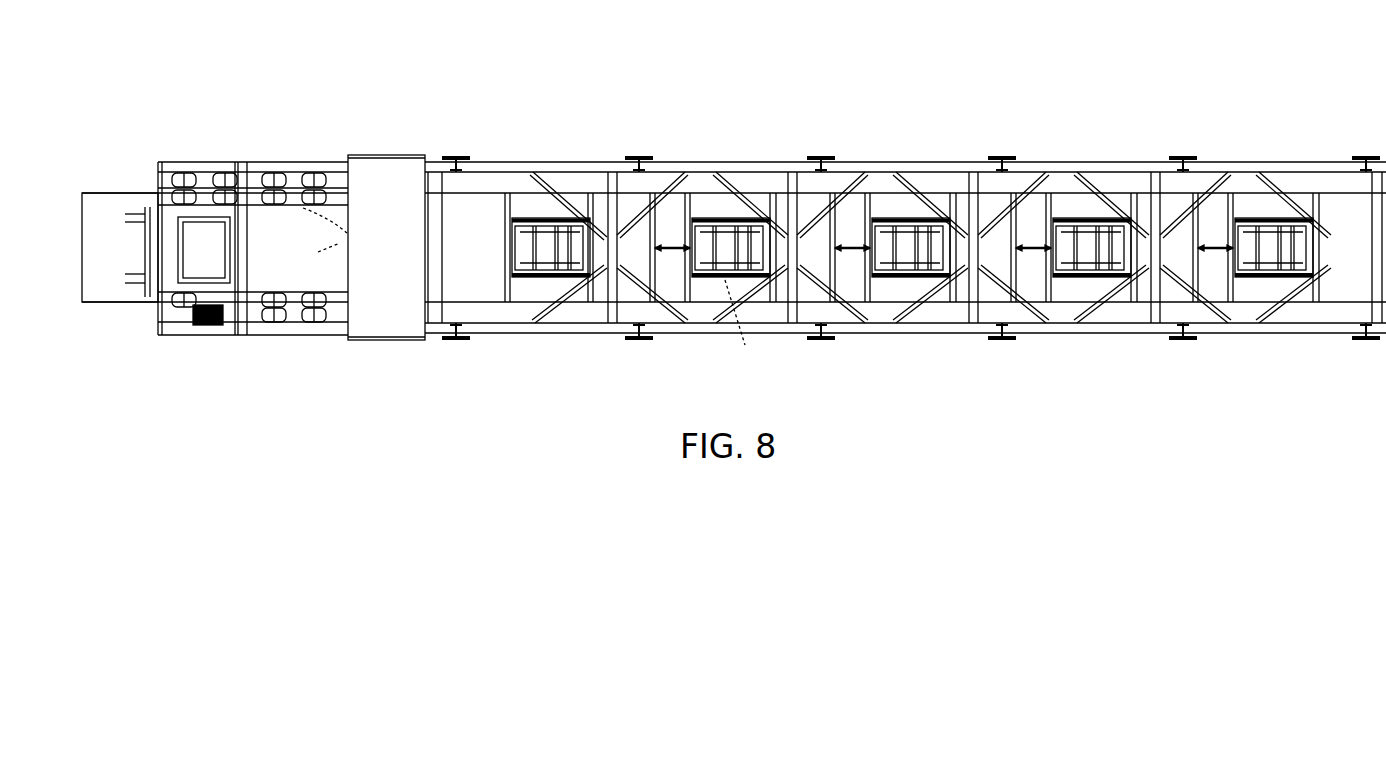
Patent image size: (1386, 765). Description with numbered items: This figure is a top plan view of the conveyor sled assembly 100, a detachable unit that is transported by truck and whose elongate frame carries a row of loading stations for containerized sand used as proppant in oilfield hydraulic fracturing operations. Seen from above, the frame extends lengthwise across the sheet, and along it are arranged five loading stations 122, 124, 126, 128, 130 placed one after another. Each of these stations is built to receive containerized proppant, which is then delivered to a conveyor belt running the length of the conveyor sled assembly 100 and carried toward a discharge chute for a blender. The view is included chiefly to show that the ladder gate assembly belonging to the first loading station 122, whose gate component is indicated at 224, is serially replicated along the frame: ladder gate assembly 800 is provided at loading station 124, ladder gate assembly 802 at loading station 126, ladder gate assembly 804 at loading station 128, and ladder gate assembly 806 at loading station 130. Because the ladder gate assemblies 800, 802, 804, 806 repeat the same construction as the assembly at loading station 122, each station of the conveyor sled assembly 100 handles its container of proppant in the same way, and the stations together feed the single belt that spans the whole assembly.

The conveyor sled assembly 100 is at (734, 194).
The loading station 122 is at (517, 214).
The loading station 124 is at (698, 225).
The loading station 126 is at (878, 215).
The loading station 128 is at (1059, 216).
The loading station 130 is at (1241, 216).
The first processing unit 224 is at (524, 281).
The ladder gate assembly 800 is at (724, 211).
The ladder gate assembly 802 is at (903, 211).
The ladder gate assembly 804 is at (1075, 222).
The ladder gate assembly 806 is at (1270, 221).